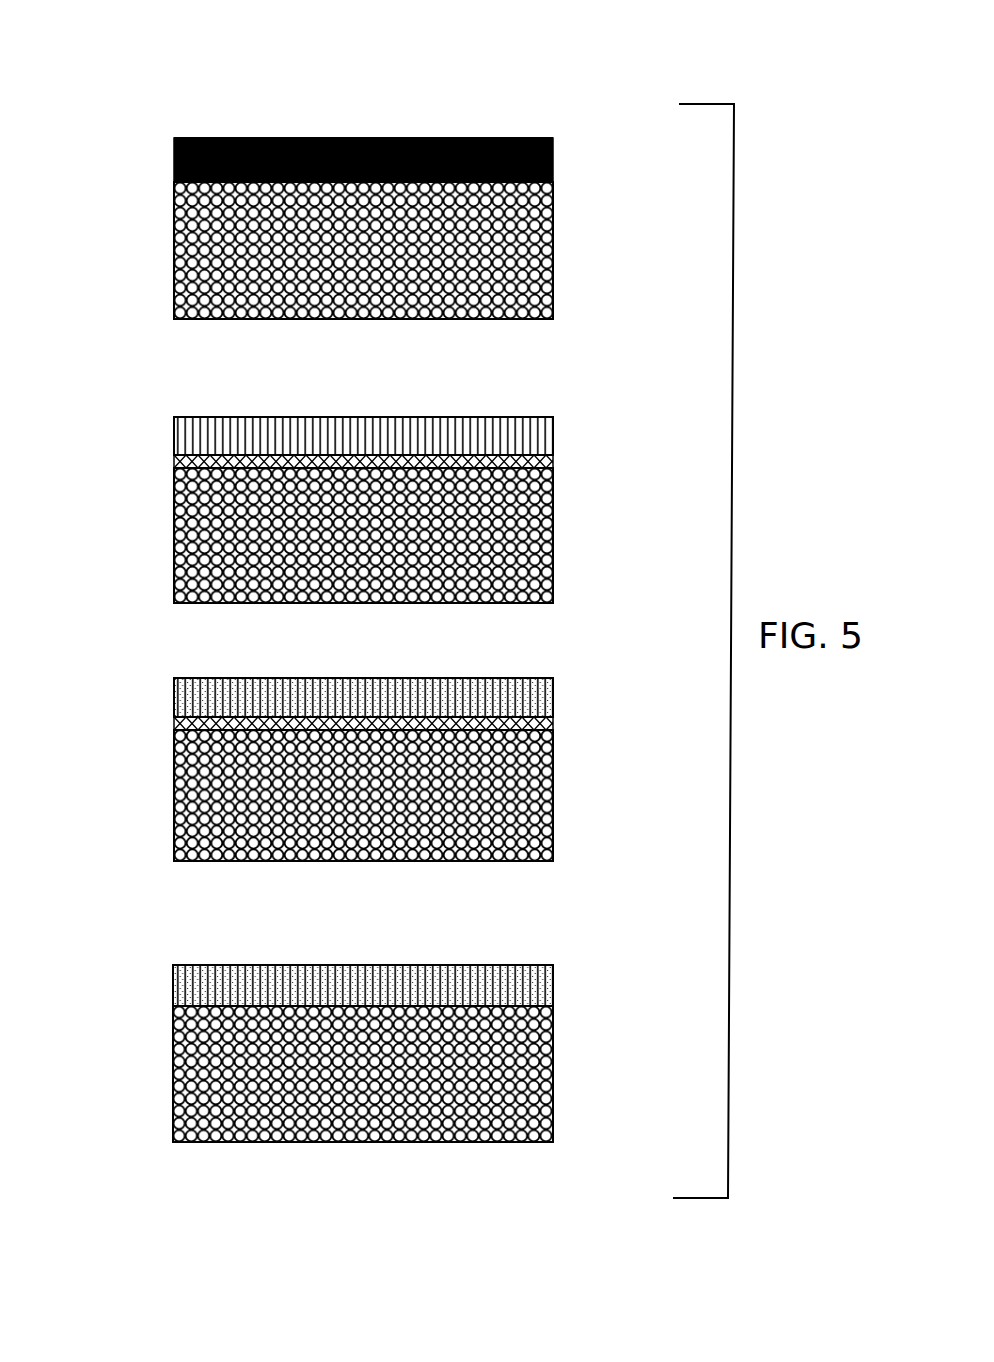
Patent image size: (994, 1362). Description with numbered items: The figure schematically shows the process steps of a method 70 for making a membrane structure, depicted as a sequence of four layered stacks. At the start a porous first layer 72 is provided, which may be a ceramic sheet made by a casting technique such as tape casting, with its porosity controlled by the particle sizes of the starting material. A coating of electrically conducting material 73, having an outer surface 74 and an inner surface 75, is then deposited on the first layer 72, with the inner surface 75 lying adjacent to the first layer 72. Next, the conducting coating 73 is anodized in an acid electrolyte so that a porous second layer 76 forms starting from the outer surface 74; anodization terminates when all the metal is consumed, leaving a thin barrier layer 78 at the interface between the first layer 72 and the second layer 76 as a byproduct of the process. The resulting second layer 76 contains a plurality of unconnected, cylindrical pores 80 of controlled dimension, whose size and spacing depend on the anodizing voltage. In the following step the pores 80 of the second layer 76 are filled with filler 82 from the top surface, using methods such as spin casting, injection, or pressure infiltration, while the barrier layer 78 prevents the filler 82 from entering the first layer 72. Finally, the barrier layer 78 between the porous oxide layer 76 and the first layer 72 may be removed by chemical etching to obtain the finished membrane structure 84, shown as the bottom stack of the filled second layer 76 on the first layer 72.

The method 70 is at (126, 44).
The porous first layer 72 is at (148, 254).
The coating of electrically conducting material 73 is at (148, 166).
The outer surface 74 is at (522, 138).
The inner surface 75 is at (543, 185).
The porous second layer 76 is at (148, 431).
The barrier layer 78 is at (148, 464).
The pores 80 is at (260, 420).
The filler 82 is at (228, 680).
The membrane structure 84 is at (592, 952).